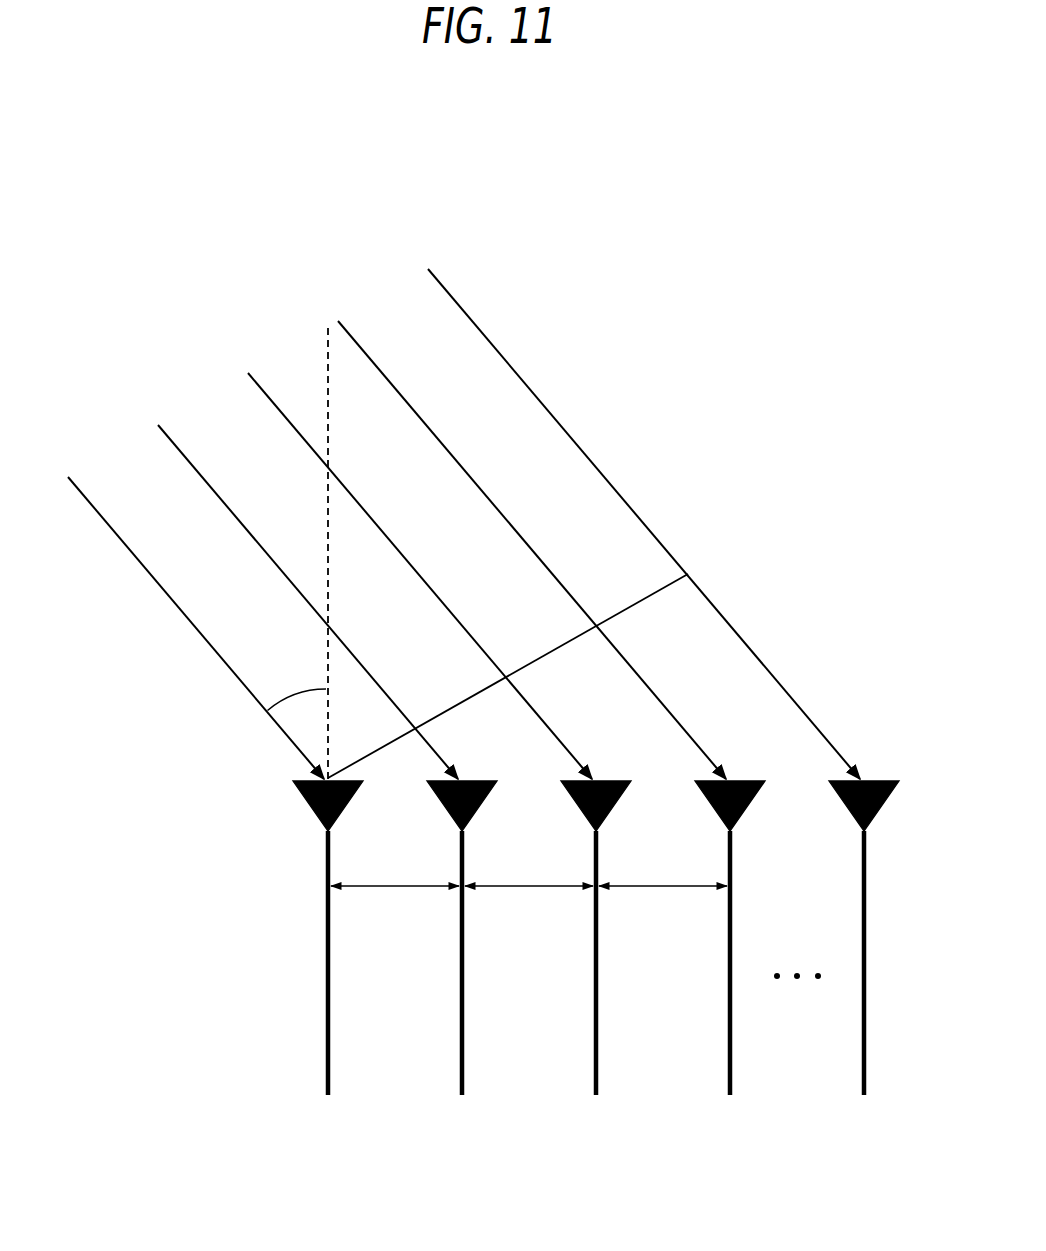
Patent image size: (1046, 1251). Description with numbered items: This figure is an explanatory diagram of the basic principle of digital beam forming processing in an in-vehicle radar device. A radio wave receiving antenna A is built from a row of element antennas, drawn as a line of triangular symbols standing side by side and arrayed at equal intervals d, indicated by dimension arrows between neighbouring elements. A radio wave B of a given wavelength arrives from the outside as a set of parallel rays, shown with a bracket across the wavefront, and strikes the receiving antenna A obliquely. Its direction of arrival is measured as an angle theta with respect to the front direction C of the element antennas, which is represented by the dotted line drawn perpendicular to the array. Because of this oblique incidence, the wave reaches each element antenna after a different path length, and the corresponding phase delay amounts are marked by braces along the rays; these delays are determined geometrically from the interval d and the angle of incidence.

The radio wave receiving antenna A is at (596, 990).
The radio wave B is at (417, 247).
The front direction C is at (328, 398).
The interval d is at (529, 907).